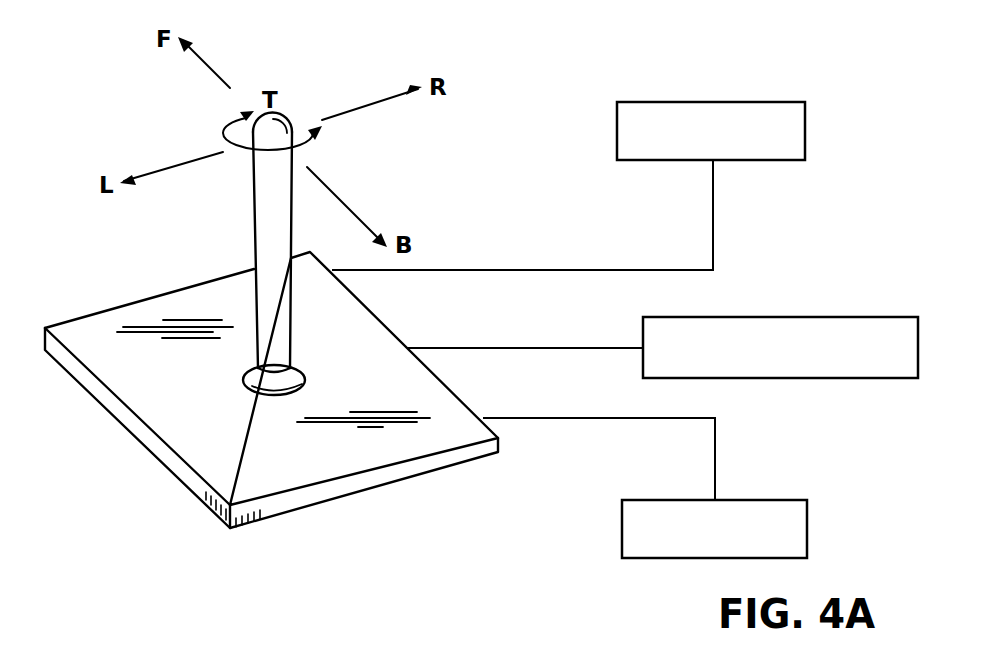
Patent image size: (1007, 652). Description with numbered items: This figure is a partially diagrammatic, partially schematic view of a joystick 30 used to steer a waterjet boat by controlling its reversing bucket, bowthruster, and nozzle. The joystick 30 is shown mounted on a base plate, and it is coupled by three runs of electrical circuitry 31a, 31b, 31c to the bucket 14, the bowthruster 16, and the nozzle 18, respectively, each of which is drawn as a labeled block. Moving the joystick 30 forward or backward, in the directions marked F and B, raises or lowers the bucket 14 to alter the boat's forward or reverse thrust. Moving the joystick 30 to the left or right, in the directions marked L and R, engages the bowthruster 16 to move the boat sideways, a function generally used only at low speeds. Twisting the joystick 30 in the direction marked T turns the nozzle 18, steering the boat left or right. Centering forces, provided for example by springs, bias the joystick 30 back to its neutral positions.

The joystick 30 is at (86, 400).
The electrical circuitry 31a is at (565, 270).
The electrical circuitry 31b is at (563, 349).
The electrical circuitry 31c is at (548, 419).
The bucket 14 is at (787, 144).
The bowthruster 16 is at (907, 362).
The nozzle 18 is at (788, 544).